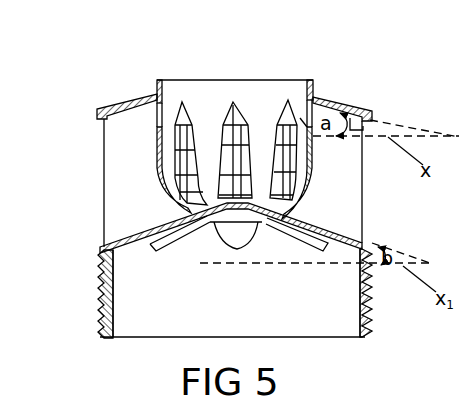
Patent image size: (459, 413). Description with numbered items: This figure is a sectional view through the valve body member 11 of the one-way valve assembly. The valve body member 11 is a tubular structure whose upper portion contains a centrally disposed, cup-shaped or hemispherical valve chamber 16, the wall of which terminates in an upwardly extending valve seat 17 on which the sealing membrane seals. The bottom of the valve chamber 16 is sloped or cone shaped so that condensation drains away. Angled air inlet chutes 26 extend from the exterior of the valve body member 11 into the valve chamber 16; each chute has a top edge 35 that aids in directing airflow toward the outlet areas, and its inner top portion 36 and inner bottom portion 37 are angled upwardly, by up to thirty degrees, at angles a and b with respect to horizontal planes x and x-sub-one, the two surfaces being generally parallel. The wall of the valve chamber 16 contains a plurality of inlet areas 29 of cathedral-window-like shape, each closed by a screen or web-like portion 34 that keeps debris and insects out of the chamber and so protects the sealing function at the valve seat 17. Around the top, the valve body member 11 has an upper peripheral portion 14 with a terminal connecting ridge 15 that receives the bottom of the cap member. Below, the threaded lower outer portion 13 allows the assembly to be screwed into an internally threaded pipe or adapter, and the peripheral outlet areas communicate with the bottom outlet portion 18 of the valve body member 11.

The valve body member 11 is at (88, 170).
The threaded lower outer portion 13 is at (374, 318).
The upper peripheral portion 14 is at (371, 117).
The terminal connecting ridge 15 is at (100, 109).
The valve chamber 16 is at (198, 98).
The valve seat 17 is at (262, 82).
The bottom outlet portion 18 is at (155, 312).
The air inlet chute 26 is at (117, 141).
The inlet area 29 is at (180, 112).
The screen or web-like portion 34 is at (298, 120).
The top edge 35 is at (350, 122).
The inner top portion 36 is at (370, 120).
The inner bottom portion 37 is at (334, 229).